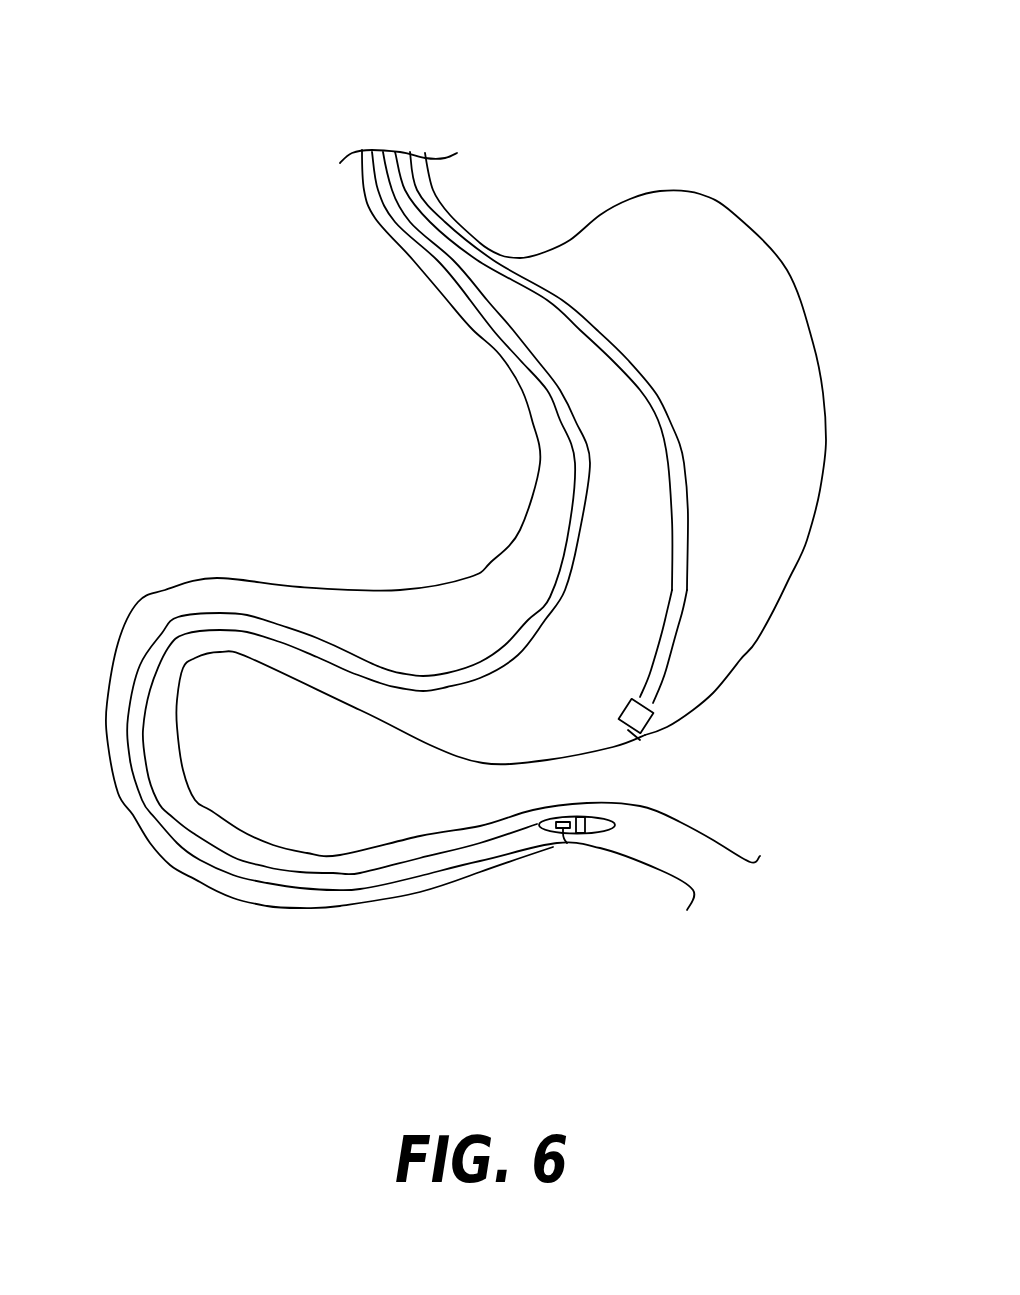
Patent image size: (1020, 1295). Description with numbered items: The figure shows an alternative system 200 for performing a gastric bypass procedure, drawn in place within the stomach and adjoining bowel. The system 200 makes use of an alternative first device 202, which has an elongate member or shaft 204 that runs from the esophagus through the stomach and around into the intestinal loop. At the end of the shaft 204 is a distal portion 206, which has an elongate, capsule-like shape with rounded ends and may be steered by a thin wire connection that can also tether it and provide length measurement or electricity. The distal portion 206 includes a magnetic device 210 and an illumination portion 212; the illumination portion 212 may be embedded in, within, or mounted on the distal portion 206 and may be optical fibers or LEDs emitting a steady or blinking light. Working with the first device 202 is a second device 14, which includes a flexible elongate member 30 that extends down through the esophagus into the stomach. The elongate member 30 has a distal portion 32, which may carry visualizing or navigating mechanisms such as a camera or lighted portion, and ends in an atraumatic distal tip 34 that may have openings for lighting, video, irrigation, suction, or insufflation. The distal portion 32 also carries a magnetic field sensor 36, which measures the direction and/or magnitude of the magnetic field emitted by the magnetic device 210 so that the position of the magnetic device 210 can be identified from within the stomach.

The second device 14 is at (690, 458).
The elongate member 30 is at (635, 353).
The distal portion 32 is at (670, 688).
The distal tip 34 is at (632, 735).
The magnetic field sensor 36 is at (665, 727).
The alternative system 200 is at (592, 149).
The alternative first device 202 is at (163, 618).
The elongate member or shaft 204 is at (298, 888).
The distal portion 206 is at (633, 832).
The magnetic device 210 is at (598, 837).
The illumination portion 212 is at (563, 837).